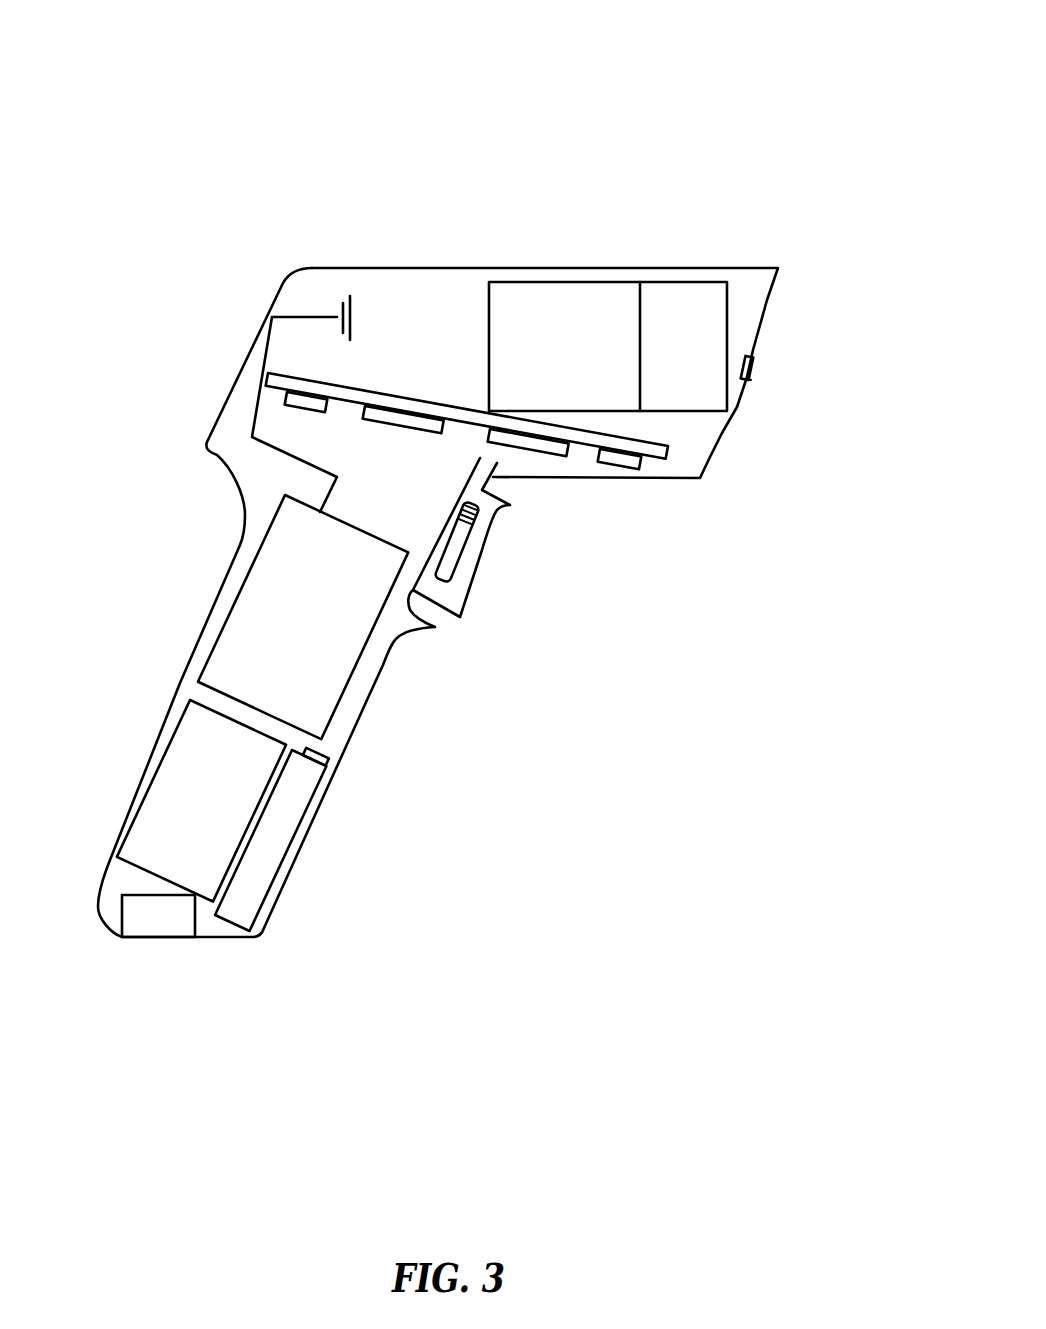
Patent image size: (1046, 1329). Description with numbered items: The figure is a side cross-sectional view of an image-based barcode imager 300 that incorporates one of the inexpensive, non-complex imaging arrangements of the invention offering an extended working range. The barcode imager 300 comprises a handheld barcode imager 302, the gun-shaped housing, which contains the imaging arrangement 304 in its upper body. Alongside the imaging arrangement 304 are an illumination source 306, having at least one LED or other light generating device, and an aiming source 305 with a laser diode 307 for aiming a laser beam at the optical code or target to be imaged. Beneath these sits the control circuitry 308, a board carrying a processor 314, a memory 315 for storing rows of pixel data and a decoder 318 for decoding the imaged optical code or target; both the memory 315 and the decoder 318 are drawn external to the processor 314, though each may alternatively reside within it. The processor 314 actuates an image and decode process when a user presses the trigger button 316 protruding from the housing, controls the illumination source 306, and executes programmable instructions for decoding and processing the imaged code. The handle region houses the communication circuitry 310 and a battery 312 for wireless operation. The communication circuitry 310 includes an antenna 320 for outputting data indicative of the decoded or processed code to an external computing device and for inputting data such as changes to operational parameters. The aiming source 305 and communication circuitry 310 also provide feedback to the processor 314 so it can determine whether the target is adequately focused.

The barcode imager 300 is at (117, 127).
The handheld barcode imager 302 is at (463, 267).
The imaging arrangement 304 is at (640, 411).
The aiming source 305 is at (752, 366).
The illumination source 306 is at (655, 282).
The laser diode 307 is at (752, 376).
The control circuitry 308 is at (358, 387).
The communication circuitry 310 is at (340, 698).
The battery 312 is at (279, 872).
The processor 314 is at (328, 406).
The memory 315 is at (645, 466).
The trigger button 316 is at (477, 557).
The decoder 318 is at (157, 773).
The antenna 320 is at (298, 317).